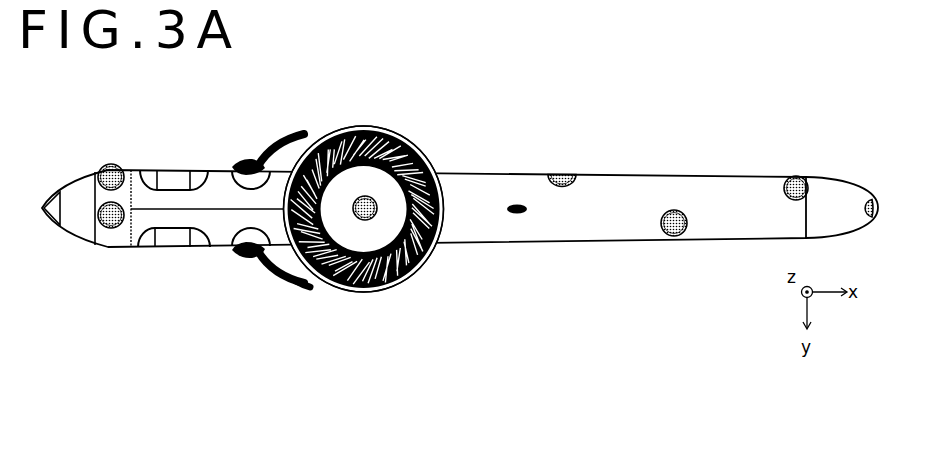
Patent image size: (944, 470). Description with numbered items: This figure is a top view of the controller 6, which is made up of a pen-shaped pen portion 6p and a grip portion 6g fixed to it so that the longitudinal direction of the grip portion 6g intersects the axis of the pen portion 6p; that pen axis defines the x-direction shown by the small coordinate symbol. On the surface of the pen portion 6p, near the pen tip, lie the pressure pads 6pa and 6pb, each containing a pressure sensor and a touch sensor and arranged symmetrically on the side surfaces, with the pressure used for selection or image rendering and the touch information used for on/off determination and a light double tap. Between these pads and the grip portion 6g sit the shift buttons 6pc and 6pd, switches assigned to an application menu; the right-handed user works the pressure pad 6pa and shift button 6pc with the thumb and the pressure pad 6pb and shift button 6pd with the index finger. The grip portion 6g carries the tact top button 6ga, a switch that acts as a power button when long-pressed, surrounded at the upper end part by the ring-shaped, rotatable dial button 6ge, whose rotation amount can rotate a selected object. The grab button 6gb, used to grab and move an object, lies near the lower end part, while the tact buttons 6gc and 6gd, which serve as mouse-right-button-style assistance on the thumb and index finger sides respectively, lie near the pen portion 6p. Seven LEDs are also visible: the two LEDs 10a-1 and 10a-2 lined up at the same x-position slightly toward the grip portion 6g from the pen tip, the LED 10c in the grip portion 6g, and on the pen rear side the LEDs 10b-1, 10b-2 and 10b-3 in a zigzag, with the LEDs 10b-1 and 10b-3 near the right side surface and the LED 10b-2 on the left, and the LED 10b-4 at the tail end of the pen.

The controller 6 is at (472, 187).
The pen portion 6p is at (514, 187).
The pressure pad 6pa is at (170, 242).
The pressure pad 6pb is at (177, 172).
The shift button 6pc is at (252, 258).
The shift button 6pd is at (243, 162).
The grip portion 6g is at (368, 292).
The tact top button 6ga is at (393, 190).
The grab button 6gb is at (263, 270).
The tact button 6gc is at (300, 279).
The tact button 6gd is at (303, 133).
The dial button 6ge is at (423, 263).
The LED 10c is at (365, 196).
The LED 10a-1 is at (115, 228).
The LED 10a-2 is at (112, 166).
The LED 10b-1 is at (563, 176).
The LED 10b-2 is at (675, 237).
The LED 10b-3 is at (795, 177).
The LED 10b-4 is at (873, 198).